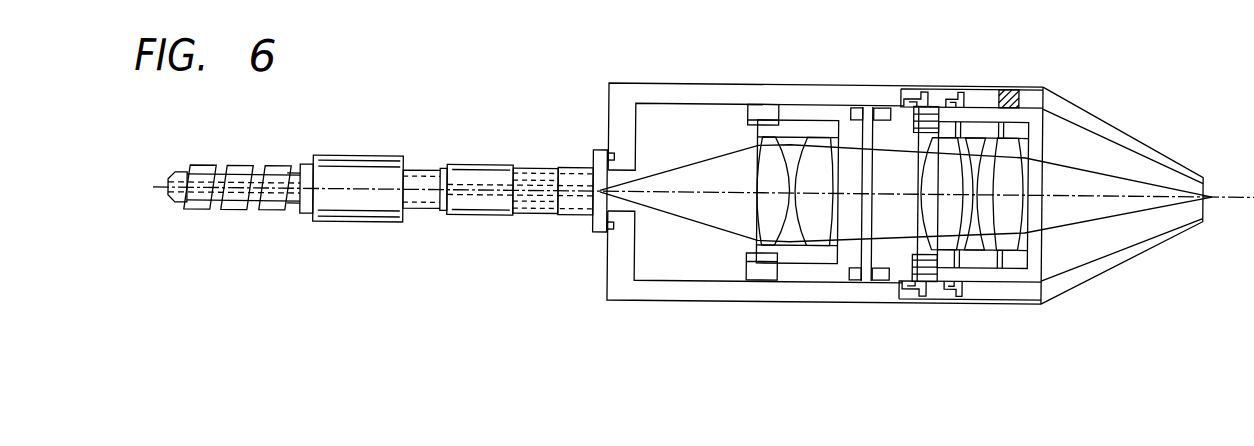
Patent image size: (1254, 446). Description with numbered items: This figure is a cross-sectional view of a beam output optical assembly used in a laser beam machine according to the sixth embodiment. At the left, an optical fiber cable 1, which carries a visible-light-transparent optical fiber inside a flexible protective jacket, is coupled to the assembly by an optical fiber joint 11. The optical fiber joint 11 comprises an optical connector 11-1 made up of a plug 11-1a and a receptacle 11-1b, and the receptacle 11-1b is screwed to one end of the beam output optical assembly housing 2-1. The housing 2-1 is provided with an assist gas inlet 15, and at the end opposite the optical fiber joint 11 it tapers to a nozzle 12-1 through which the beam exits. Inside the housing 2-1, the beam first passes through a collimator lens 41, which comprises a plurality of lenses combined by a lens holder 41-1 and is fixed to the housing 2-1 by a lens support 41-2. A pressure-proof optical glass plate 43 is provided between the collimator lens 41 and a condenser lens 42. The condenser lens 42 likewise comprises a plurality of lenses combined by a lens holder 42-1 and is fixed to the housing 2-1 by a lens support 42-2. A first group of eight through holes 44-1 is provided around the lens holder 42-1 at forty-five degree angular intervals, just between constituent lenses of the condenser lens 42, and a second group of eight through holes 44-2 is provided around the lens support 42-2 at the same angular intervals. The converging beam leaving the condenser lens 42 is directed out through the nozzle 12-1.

The optical fiber cable 1 is at (258, 166).
The optical fiber joint 11 is at (398, 252).
The optical connector 11-1 is at (396, 224).
The plug 11-1a is at (493, 216).
The receptacle 11-1b is at (593, 228).
The beam output optical assembly housing 2-1 is at (607, 282).
The nozzle 12-1 is at (1093, 110).
The collimator lens 41 is at (768, 165).
The lens holder 41-1 is at (817, 108).
The lens support 41-2 is at (753, 278).
The condenser lens 42 is at (933, 104).
The lens holder 42-1 is at (980, 104).
The lens support 42-2 is at (897, 278).
The pressure-proof optical glass plate 43 is at (867, 279).
The assist gas inlet 15 is at (1008, 84).
The first group of through holes 44-1 is at (988, 282).
The second group of through holes 44-2 is at (938, 280).